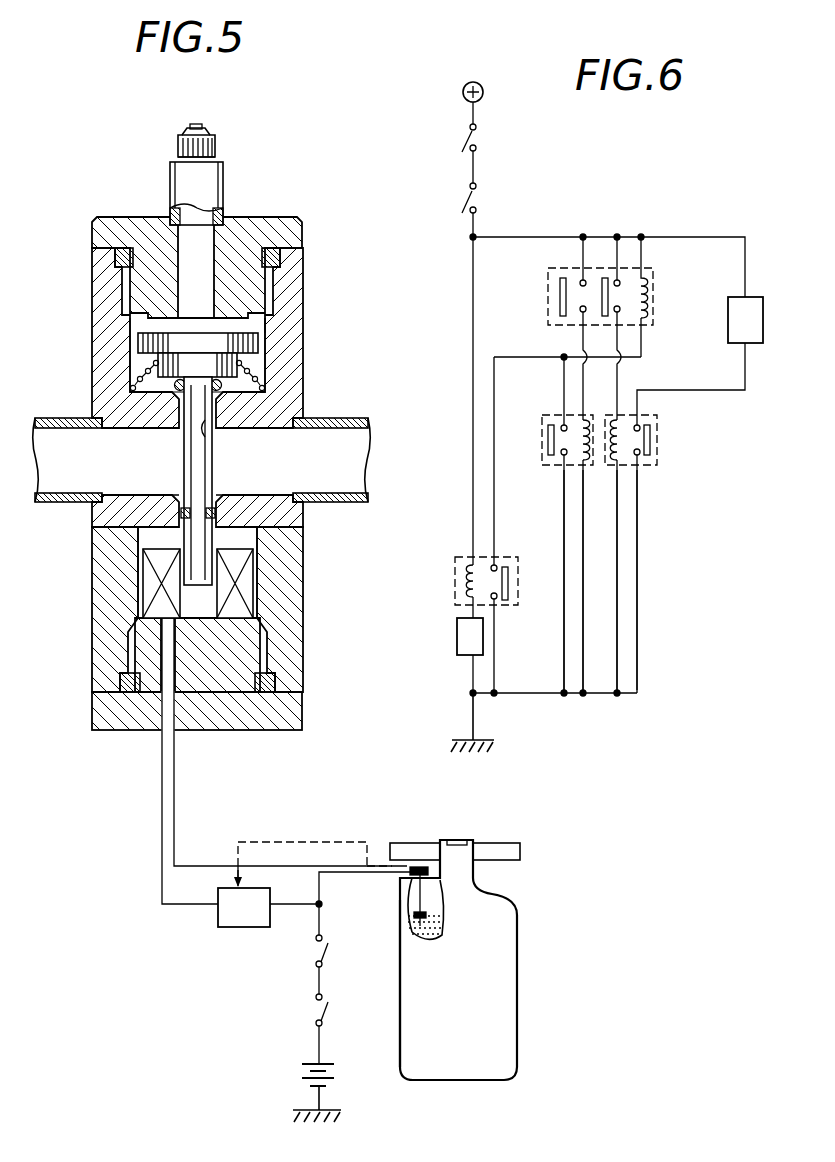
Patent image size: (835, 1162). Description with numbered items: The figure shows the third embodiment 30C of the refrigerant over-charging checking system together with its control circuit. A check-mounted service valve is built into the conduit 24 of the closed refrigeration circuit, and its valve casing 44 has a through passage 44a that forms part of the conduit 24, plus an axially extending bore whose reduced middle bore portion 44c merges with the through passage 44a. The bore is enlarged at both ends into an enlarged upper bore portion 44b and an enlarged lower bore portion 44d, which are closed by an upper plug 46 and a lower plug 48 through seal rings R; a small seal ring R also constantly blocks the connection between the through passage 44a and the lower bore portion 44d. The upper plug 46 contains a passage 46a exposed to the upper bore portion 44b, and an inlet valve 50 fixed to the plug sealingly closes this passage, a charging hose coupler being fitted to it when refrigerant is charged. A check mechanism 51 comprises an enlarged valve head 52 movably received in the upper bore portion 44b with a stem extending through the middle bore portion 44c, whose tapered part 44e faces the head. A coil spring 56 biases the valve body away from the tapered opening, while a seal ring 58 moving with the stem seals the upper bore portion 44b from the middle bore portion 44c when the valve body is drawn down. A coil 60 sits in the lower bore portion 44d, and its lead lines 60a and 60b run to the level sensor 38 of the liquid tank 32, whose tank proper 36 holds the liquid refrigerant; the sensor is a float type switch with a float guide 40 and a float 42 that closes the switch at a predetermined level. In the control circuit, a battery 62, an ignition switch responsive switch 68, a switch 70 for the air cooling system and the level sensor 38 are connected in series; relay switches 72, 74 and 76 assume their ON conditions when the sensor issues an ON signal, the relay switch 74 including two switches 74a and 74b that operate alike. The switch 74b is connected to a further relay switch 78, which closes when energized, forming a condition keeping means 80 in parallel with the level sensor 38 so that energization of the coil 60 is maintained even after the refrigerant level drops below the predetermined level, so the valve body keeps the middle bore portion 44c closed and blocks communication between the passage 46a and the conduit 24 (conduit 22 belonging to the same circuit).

In FIG. 5, the conduit 22 is at (492, 850).
In FIG. 5, the conduit 24 is at (63, 418).
In FIG. 6, the third embodiment 30C is at (422, 727).
In FIG. 5, the level sensor-mounted liquid tank 32 is at (529, 923).
In FIG. 5, the tank proper 36 is at (490, 985).
In FIG. 5, the level sensor 38 is at (420, 857).
In FIG. 6, the level sensor 38 is at (458, 637).
In FIG. 5, the float guide 40 is at (426, 892).
In FIG. 5, the float 42 is at (432, 926).
In FIG. 5, the valve casing 44 is at (100, 350).
In FIG. 5, the through passage 44a is at (135, 493).
In FIG. 5, the enlarged upper bore portion 44b is at (129, 328).
In FIG. 5, the reduced middle bore portion 44c is at (205, 435).
In FIG. 5, the enlarged lower bore portion 44d is at (250, 538).
In FIG. 5, the tapered part 44e is at (232, 396).
In FIG. 5, the upper plug 46 is at (284, 242).
In FIG. 5, the passage 46a is at (186, 250).
In FIG. 5, the lower plug 48 is at (276, 732).
In FIG. 5, the inlet valve 50 is at (224, 188).
In FIG. 5, the check mechanism 51 is at (264, 329).
In FIG. 5, the valve head 52 is at (246, 341).
In FIG. 5, the coil spring 56 is at (250, 372).
In FIG. 5, the seal ring 58 is at (263, 390).
In FIG. 5, the coil 60 is at (245, 587).
In FIG. 6, the coil 60 is at (728, 315).
In FIG. 5, the lead line 60a is at (176, 795).
In FIG. 5, the lead line 60b is at (162, 810).
In FIG. 5, the battery 62 is at (334, 1075).
In FIG. 6, the battery 62 is at (483, 95).
In FIG. 5, the ignition switch responsive switch 68 is at (329, 1005).
In FIG. 6, the ignition switch responsive switch 68 is at (480, 142).
In FIG. 5, the switch for the air cooling system 70 is at (329, 945).
In FIG. 6, the switch for the air cooling system 70 is at (480, 202).
In FIG. 6, the relay switch 72 is at (453, 575).
In FIG. 6, the relay switch 74 is at (628, 248).
In FIG. 6, the switch 74a is at (607, 292).
In FIG. 6, the switch 74b is at (576, 294).
In FIG. 6, the relay switch 76 is at (658, 443).
In FIG. 6, the relay switch 78 is at (553, 466).
In FIG. 5, the condition keeping means 80 is at (252, 920).
In FIG. 6, the condition keeping means 80 is at (588, 573).
In FIG. 5, the seal ring R is at (115, 256).